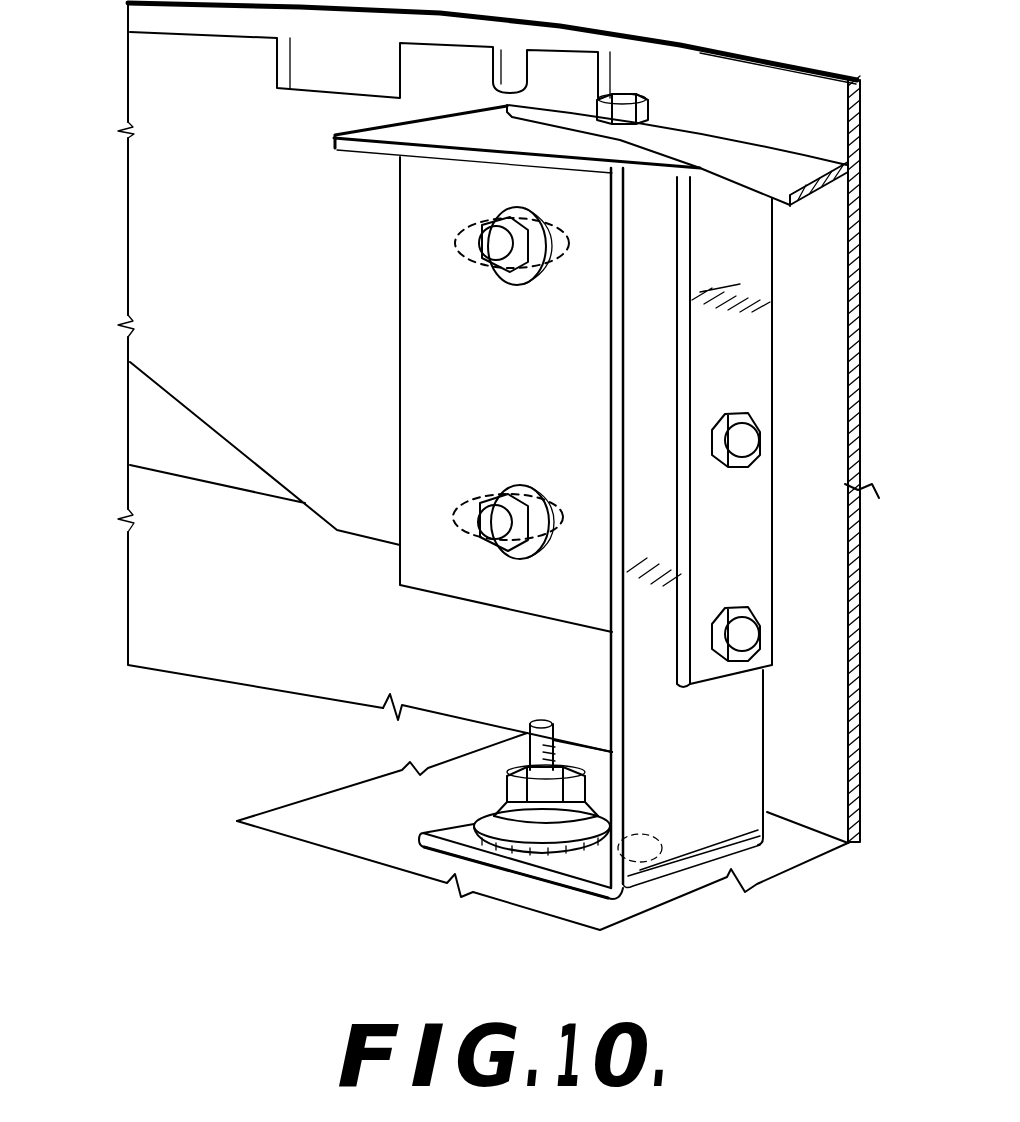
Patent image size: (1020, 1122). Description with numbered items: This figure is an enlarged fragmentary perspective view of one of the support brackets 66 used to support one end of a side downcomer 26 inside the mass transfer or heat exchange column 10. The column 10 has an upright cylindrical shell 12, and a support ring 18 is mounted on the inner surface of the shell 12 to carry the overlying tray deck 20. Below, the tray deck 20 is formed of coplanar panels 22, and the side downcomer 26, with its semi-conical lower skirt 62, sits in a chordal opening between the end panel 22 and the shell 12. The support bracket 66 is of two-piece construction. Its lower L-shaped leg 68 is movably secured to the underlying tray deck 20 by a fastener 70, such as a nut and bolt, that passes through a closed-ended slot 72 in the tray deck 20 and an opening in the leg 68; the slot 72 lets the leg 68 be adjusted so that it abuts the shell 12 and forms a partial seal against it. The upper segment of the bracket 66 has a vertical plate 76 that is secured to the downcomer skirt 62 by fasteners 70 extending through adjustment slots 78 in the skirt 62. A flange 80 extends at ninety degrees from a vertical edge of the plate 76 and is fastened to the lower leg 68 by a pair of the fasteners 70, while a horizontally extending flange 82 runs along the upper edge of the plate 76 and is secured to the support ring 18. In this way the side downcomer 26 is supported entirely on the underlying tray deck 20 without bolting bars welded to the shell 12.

The mass transfer or heat exchange column 10 is at (814, 62).
The cylindrical shell 12 is at (860, 133).
The support ring 18 is at (757, 147).
The tray deck 20 is at (363, 833).
The panel 22 is at (333, 800).
The side downcomer 26 is at (157, 252).
The downcomer skirt 62 is at (148, 440).
The support bracket 66 is at (776, 403).
The lower L-shaped leg 68 is at (757, 727).
The fastener 70 is at (645, 102).
The closed-ended slot 72 is at (641, 833).
The vertical plate 76 is at (412, 450).
The adjustment slot 78 is at (552, 236).
The flange 80 is at (760, 265).
The horizontally extending flange 82 is at (472, 158).